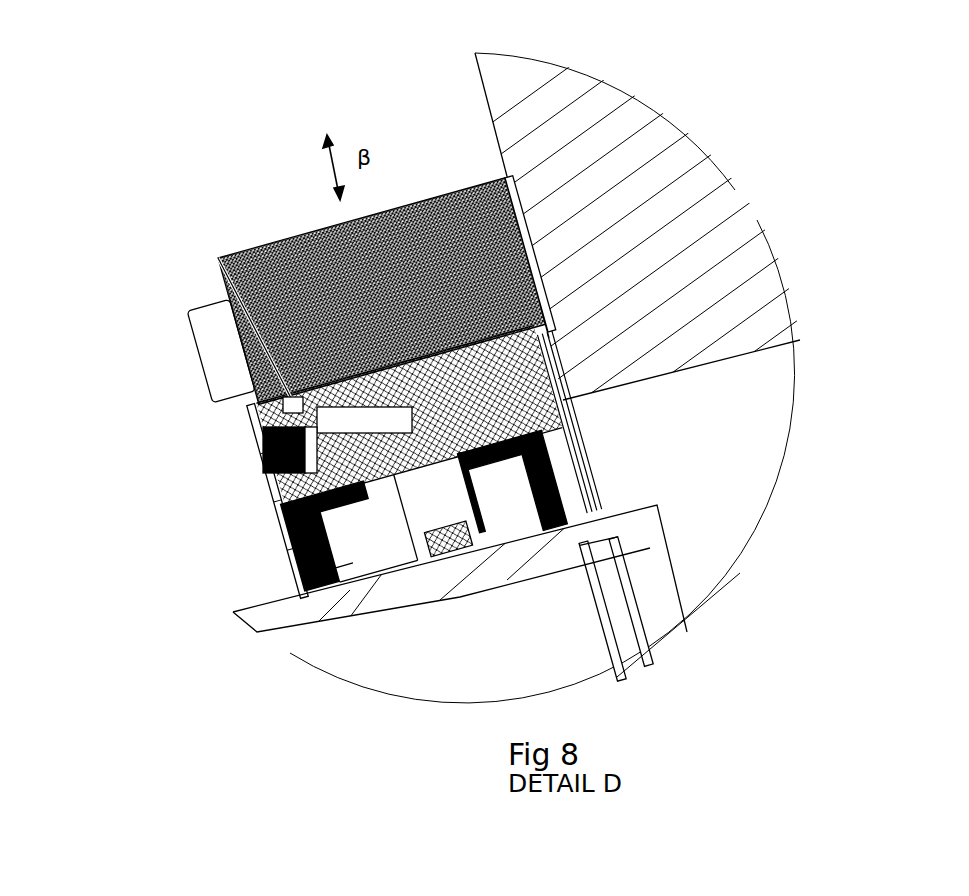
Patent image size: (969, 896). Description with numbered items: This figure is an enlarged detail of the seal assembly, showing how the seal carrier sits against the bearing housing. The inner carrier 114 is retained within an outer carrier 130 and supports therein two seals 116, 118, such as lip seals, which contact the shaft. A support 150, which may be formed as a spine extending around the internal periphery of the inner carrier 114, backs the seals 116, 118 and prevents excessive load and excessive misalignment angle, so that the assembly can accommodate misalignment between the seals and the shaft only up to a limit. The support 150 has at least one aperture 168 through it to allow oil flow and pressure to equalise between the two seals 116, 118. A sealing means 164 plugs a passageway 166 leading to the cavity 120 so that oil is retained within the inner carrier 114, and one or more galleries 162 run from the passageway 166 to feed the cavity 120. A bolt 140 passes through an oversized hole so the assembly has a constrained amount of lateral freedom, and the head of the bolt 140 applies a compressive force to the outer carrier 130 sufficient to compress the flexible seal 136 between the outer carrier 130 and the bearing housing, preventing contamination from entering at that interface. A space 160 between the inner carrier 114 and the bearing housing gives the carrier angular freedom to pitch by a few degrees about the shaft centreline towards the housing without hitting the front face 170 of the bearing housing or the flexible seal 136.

The inner carrier 114 is at (280, 490).
The seal 116 is at (290, 540).
The seal 118 is at (562, 527).
The cavity 120 is at (378, 540).
The outer carrier 130 is at (310, 230).
The flexible seal 136 is at (507, 177).
The bolt 140 is at (190, 305).
The support 150 is at (217, 258).
The space 160 is at (543, 353).
The gallery 162 is at (462, 533).
The sealing means 164 is at (262, 428).
The passageway 166 is at (340, 567).
The aperture 168 is at (445, 513).
The front face 170 is at (490, 108).